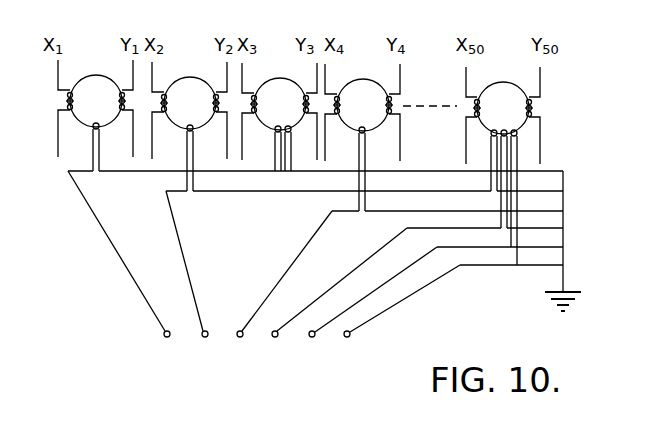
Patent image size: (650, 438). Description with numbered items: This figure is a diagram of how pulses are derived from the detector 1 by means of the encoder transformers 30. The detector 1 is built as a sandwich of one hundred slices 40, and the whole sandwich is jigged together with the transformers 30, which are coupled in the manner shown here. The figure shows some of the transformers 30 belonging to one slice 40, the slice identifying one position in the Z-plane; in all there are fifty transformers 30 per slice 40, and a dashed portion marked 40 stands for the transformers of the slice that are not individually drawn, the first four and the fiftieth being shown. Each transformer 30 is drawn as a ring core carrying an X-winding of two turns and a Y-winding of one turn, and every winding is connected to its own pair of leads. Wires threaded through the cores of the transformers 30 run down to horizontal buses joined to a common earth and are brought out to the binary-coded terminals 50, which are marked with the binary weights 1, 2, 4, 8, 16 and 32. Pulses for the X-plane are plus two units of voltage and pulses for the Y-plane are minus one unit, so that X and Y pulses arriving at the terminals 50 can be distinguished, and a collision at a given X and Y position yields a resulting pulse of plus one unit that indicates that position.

The encoder transformer 30 is at (98, 80).
The slice 40 is at (432, 106).
The binary-coded terminals 50 is at (271, 327).
The detector 1 is at (120, 268).
The terminal 2 is at (188, 278).
The terminal 4 is at (283, 288).
The terminal 8 is at (338, 296).
The terminal 16 is at (368, 306).
The terminal 32 is at (397, 315).